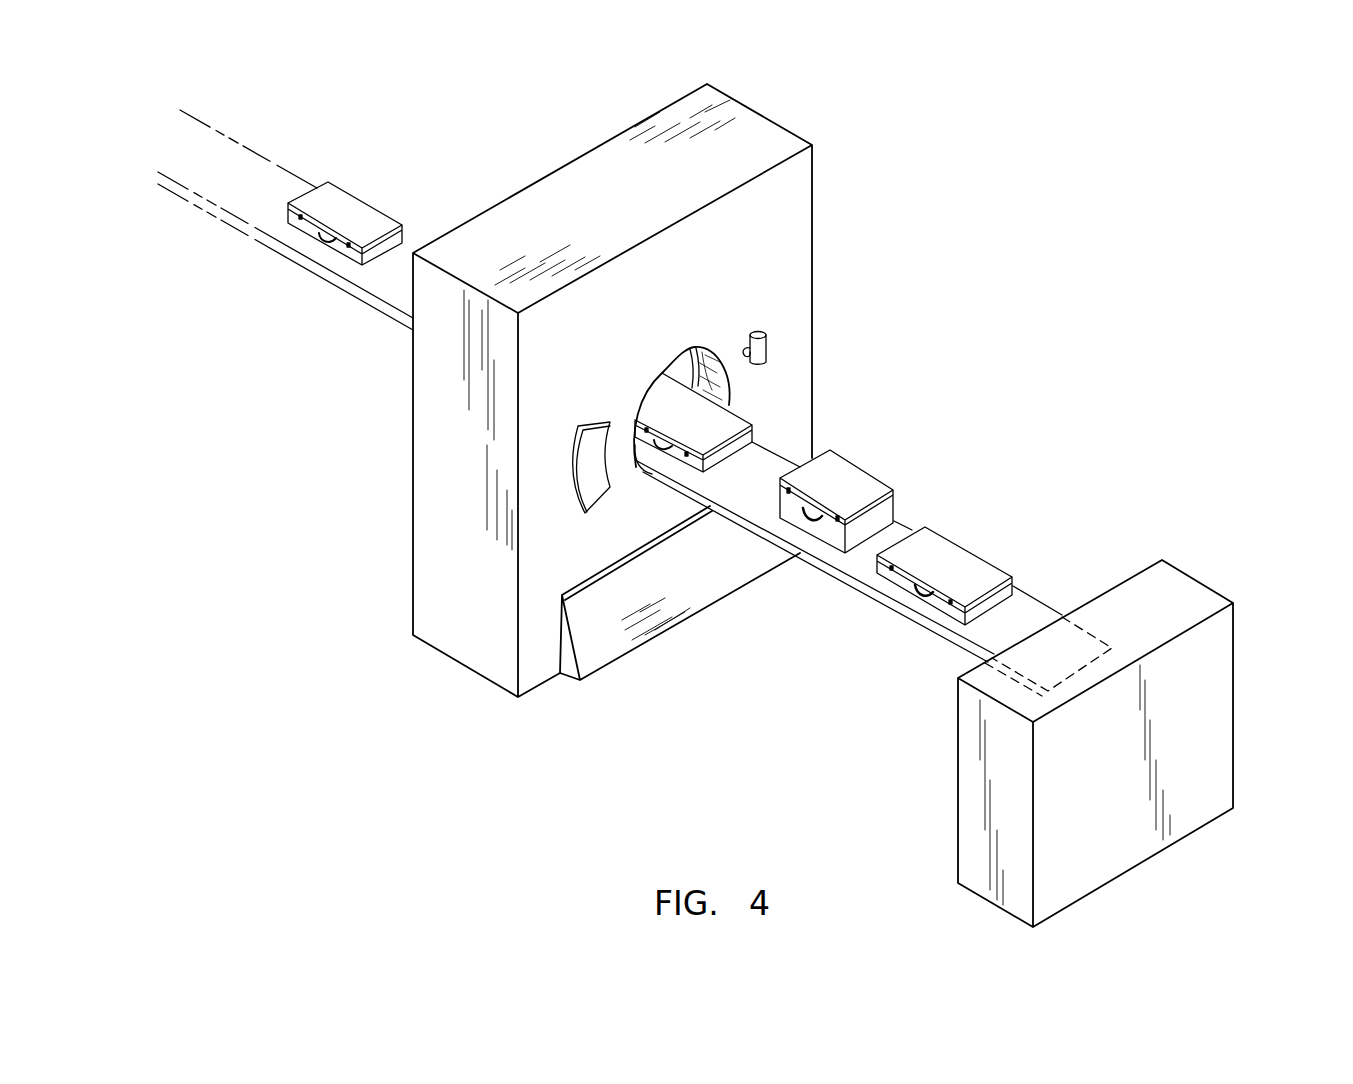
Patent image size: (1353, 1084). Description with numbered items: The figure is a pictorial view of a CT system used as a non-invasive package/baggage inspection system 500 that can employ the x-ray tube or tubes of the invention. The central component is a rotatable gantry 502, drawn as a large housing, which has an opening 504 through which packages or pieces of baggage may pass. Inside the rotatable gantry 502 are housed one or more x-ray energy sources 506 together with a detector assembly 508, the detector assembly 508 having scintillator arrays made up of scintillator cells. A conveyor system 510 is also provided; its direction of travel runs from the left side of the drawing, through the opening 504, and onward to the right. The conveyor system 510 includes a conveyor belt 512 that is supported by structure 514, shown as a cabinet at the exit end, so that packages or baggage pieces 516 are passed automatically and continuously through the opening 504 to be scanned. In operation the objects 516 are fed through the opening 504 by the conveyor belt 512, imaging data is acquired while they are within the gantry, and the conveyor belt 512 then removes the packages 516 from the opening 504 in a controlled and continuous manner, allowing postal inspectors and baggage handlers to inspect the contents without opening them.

The package/baggage inspection system 500 is at (965, 408).
The rotatable gantry 502 is at (751, 289).
The opening 504 is at (705, 355).
The x-ray energy source 506 is at (768, 352).
The detector assembly 508 is at (600, 433).
The conveyor system 510 is at (175, 220).
The conveyor belt 512 is at (386, 281).
The structure 514 is at (1220, 697).
The packages or baggage pieces 516 is at (357, 208).